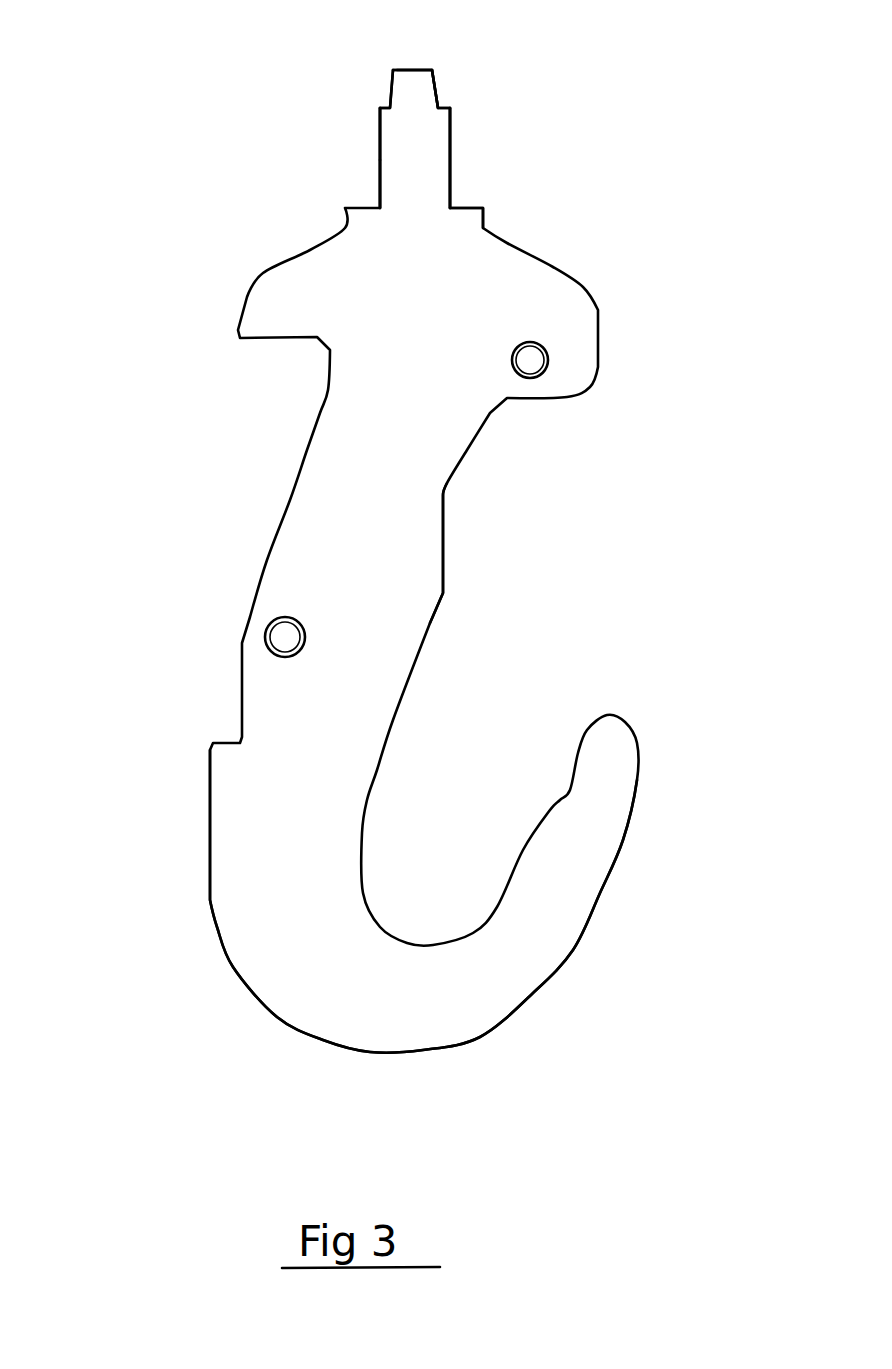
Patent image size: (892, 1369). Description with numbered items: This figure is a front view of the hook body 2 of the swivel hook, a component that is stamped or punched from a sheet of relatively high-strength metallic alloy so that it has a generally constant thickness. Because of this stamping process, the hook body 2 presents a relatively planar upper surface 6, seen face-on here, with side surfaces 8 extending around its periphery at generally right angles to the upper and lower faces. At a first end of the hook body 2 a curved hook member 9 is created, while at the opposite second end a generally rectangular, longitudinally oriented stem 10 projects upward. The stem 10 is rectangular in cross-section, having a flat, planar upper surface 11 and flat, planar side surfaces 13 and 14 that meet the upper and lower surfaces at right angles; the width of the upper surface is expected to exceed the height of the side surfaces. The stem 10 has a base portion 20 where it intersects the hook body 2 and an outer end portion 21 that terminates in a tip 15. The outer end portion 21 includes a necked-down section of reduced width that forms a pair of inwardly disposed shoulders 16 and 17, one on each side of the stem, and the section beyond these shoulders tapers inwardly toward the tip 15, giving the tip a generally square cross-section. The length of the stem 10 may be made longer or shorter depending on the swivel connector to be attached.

The hook body 2 is at (318, 497).
The upper surface 6 is at (372, 565).
The side surfaces 8 is at (443, 557).
The hook member 9 is at (314, 891).
The stem 10 is at (425, 146).
The upper surface of stem 11 is at (432, 187).
The side surface of stem 13 is at (378, 181).
The side surface of stem 14 is at (450, 173).
The tip 15 is at (433, 68).
The shoulder 16 is at (378, 108).
The shoulder 17 is at (450, 108).
The base portion 20 is at (435, 202).
The outer end portion 21 is at (388, 125).